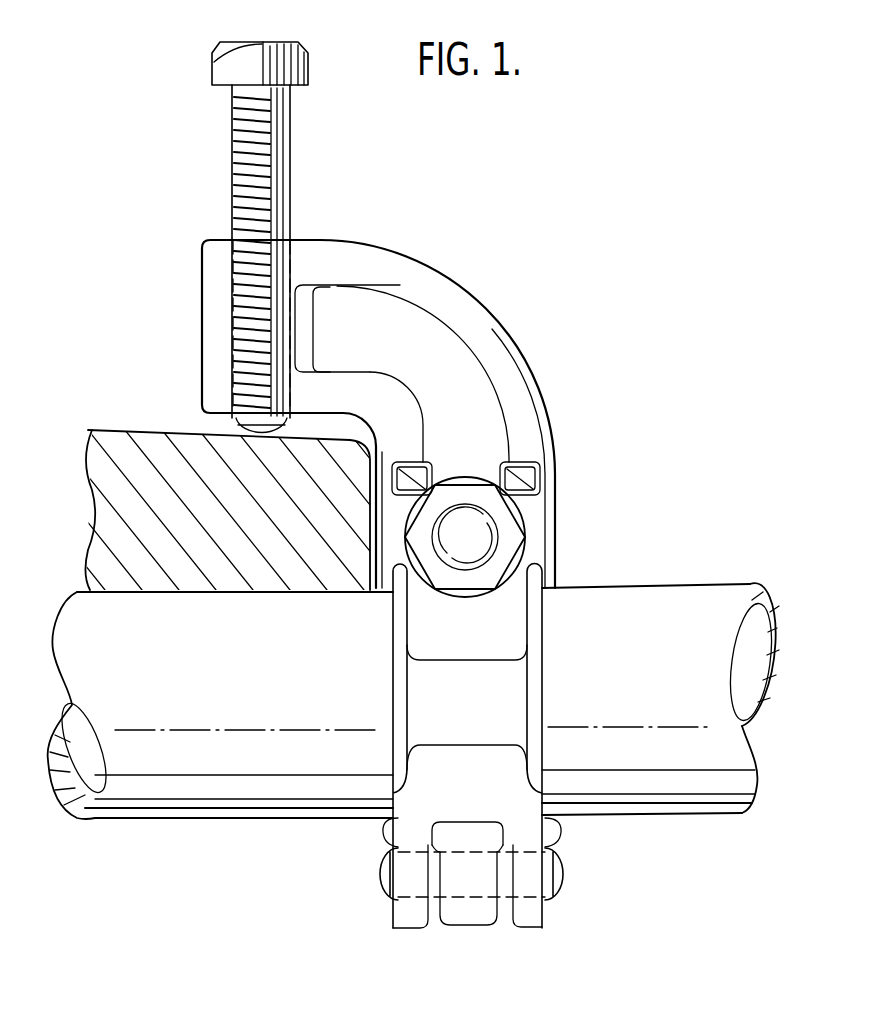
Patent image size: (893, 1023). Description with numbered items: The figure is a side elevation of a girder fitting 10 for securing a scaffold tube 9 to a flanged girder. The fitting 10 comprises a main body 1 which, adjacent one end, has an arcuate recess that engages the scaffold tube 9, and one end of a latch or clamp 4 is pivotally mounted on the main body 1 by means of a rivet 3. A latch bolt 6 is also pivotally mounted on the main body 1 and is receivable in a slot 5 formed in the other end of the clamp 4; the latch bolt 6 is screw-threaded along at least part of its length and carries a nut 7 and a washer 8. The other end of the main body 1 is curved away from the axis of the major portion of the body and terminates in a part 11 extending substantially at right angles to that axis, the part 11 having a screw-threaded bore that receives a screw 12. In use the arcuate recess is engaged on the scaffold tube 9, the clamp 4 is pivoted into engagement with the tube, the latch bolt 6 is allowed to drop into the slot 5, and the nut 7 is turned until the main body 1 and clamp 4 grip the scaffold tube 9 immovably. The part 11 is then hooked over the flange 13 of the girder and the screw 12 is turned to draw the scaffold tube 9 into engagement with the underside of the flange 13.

The main body 1 is at (350, 378).
The rivet 3 is at (560, 880).
The clamp 4 is at (510, 800).
The slot 5 is at (497, 470).
The latch bolt 6 is at (483, 525).
The nut 7 is at (508, 530).
The washer 8 is at (527, 567).
The scaffold tube 9 is at (343, 808).
The fitting 10 is at (355, 242).
The part 11 is at (201, 281).
The screw 12 is at (242, 177).
The flange 13 is at (156, 437).